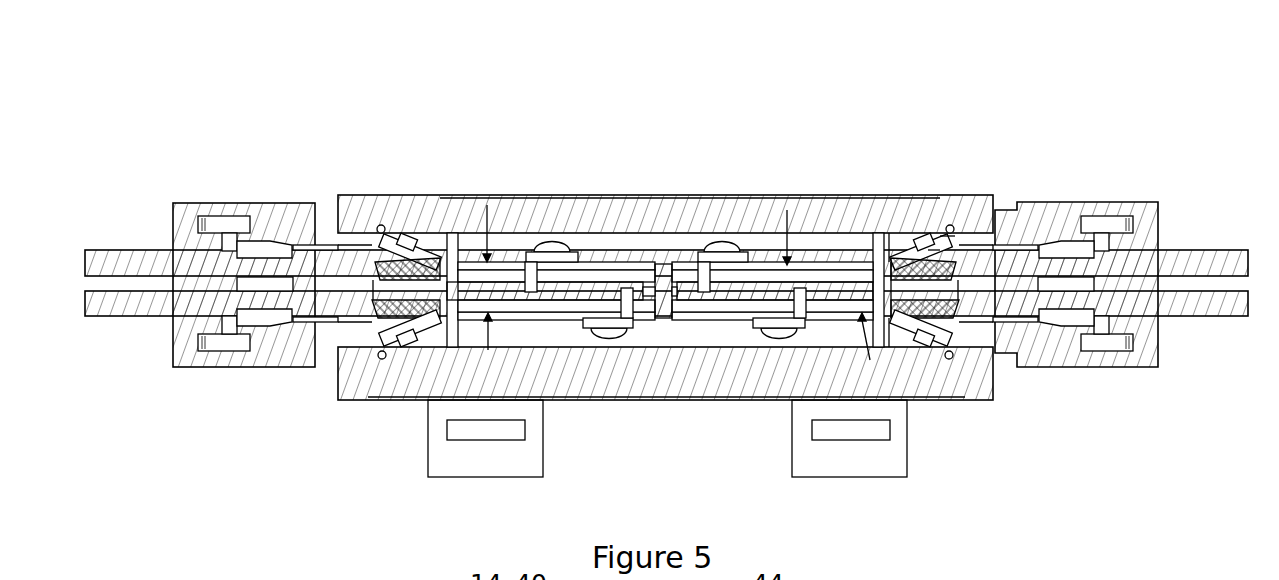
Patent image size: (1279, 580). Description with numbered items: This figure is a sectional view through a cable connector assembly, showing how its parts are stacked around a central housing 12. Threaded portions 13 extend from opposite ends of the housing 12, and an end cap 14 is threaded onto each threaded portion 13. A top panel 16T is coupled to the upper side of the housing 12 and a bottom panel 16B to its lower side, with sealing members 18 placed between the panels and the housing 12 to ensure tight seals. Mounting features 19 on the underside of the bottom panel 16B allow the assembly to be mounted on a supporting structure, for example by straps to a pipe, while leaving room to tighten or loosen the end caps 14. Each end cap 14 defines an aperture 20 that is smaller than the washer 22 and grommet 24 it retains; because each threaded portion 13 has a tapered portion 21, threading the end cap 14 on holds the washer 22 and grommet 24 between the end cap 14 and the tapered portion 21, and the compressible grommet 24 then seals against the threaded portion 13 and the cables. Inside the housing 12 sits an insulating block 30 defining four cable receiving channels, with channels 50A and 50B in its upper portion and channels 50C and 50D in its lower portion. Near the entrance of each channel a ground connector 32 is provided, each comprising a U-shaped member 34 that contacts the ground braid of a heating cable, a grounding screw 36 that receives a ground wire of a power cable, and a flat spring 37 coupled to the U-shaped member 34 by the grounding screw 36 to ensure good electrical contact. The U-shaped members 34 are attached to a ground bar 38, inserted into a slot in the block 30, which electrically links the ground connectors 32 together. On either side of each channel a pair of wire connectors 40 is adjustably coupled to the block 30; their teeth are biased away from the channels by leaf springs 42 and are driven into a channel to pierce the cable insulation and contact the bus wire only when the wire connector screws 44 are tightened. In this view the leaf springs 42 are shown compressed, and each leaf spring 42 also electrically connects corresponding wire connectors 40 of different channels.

The housing 12 is at (362, 225).
The threaded portion 13 is at (306, 215).
The end cap 14 is at (177, 227).
The top panel 16T is at (653, 210).
The bottom panel 16B is at (573, 387).
The sealing member 18 is at (390, 237).
The mounting feature 19 is at (428, 460).
The aperture 20 is at (167, 316).
The tapered portion 21 is at (262, 337).
The washer 22 is at (235, 235).
The grommet 24 is at (250, 238).
The insulating block 30 is at (665, 300).
The ground connector 32 is at (902, 233).
The U-shaped member 34 is at (898, 250).
The grounding screw 36 is at (940, 235).
The flat spring 37 is at (932, 250).
The ground bar 38 is at (370, 292).
The wire connector 40 is at (507, 272).
The leaf spring 42 is at (605, 262).
The wire connector screw 44 is at (556, 236).
The cable receiving channel 50A is at (487, 205).
The cable receiving channel 50B is at (787, 210).
The cable receiving channel 50C is at (488, 350).
The cable receiving channel 50D is at (870, 360).